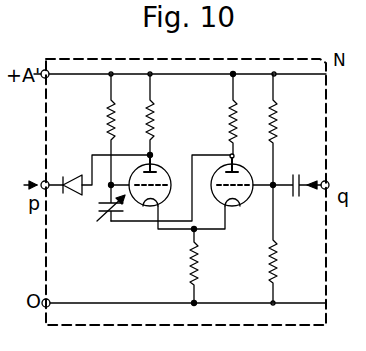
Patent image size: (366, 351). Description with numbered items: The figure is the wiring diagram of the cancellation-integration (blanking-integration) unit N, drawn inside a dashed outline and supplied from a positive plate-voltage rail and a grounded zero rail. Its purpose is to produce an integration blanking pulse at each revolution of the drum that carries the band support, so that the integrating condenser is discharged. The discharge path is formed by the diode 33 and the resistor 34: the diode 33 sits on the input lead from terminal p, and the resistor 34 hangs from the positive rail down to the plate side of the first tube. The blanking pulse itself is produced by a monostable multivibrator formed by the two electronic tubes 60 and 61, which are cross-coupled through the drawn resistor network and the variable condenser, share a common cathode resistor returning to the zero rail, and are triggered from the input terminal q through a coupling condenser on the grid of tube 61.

The diode 33 is at (99, 171).
The resistor 34 is at (165, 114).
The electronic tube 60 is at (152, 187).
The electronic tube 61 is at (233, 151).